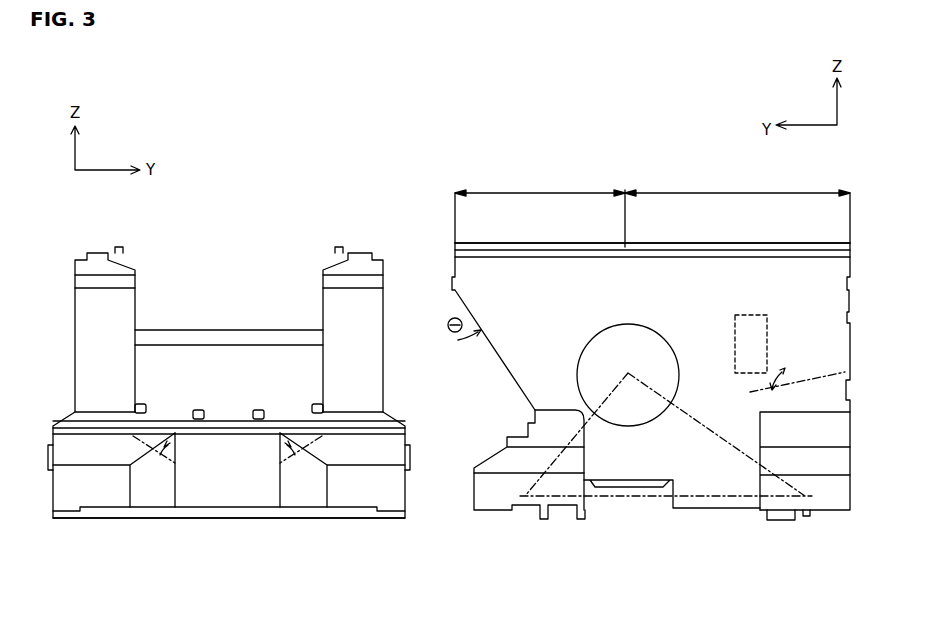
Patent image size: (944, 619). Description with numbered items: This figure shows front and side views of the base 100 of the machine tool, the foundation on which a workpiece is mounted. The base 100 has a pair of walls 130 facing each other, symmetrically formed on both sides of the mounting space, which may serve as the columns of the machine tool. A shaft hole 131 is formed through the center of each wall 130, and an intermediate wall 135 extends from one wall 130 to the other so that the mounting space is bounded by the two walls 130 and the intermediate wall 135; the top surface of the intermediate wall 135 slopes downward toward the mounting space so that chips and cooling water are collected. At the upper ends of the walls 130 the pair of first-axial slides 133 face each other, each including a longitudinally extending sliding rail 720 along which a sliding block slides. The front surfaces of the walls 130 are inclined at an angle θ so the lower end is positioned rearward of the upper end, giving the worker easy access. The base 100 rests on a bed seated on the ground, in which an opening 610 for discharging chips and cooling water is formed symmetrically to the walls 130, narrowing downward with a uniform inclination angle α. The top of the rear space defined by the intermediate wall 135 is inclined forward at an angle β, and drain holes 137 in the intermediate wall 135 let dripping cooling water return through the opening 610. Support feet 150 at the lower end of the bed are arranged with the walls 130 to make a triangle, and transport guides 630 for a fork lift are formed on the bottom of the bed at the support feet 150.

The base 100 is at (270, 104).
The walls 130 is at (128, 298).
The shaft hole 131 is at (577, 373).
The first-axial slides 133 is at (466, 236).
The intermediate wall 135 is at (212, 365).
The drain holes 137 is at (323, 407).
The support feet 150 is at (68, 495).
The opening 610 is at (168, 463).
The transport guides 630 is at (566, 512).
The sliding rail 720 is at (455, 252).